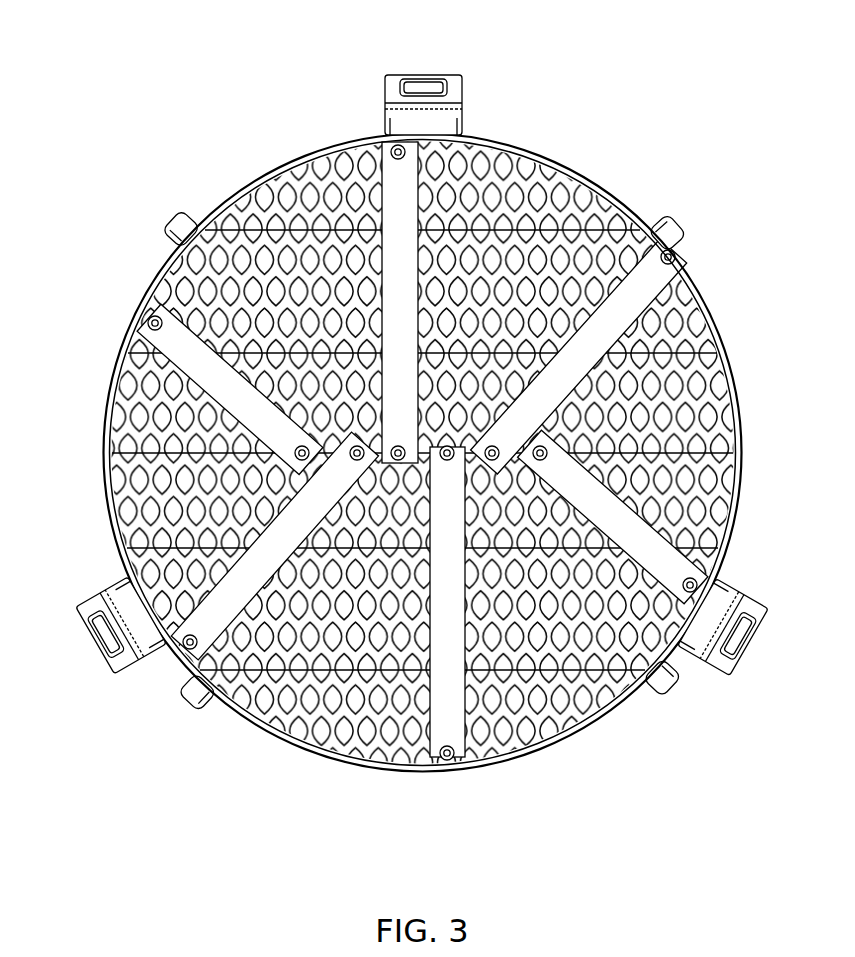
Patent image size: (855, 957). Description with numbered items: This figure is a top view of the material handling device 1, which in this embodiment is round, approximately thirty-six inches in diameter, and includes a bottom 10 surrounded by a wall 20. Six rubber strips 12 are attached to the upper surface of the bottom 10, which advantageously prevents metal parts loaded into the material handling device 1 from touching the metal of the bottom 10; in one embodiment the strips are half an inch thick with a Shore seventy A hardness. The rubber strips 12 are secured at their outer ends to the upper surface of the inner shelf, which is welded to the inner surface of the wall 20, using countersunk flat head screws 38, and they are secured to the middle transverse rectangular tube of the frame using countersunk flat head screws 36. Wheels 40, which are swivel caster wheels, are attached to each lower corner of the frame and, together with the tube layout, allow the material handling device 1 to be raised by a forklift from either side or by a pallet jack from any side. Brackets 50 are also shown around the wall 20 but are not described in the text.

The material handling device 1 is at (712, 95).
The bottom 10 is at (539, 158).
The rubber strips 12 is at (389, 311).
The wall 20 is at (245, 164).
The countersunk flat head screws 36 is at (440, 768).
The countersunk flat head screws 38 is at (597, 198).
The wheels 40 is at (172, 226).
The bracket 50 is at (466, 72).